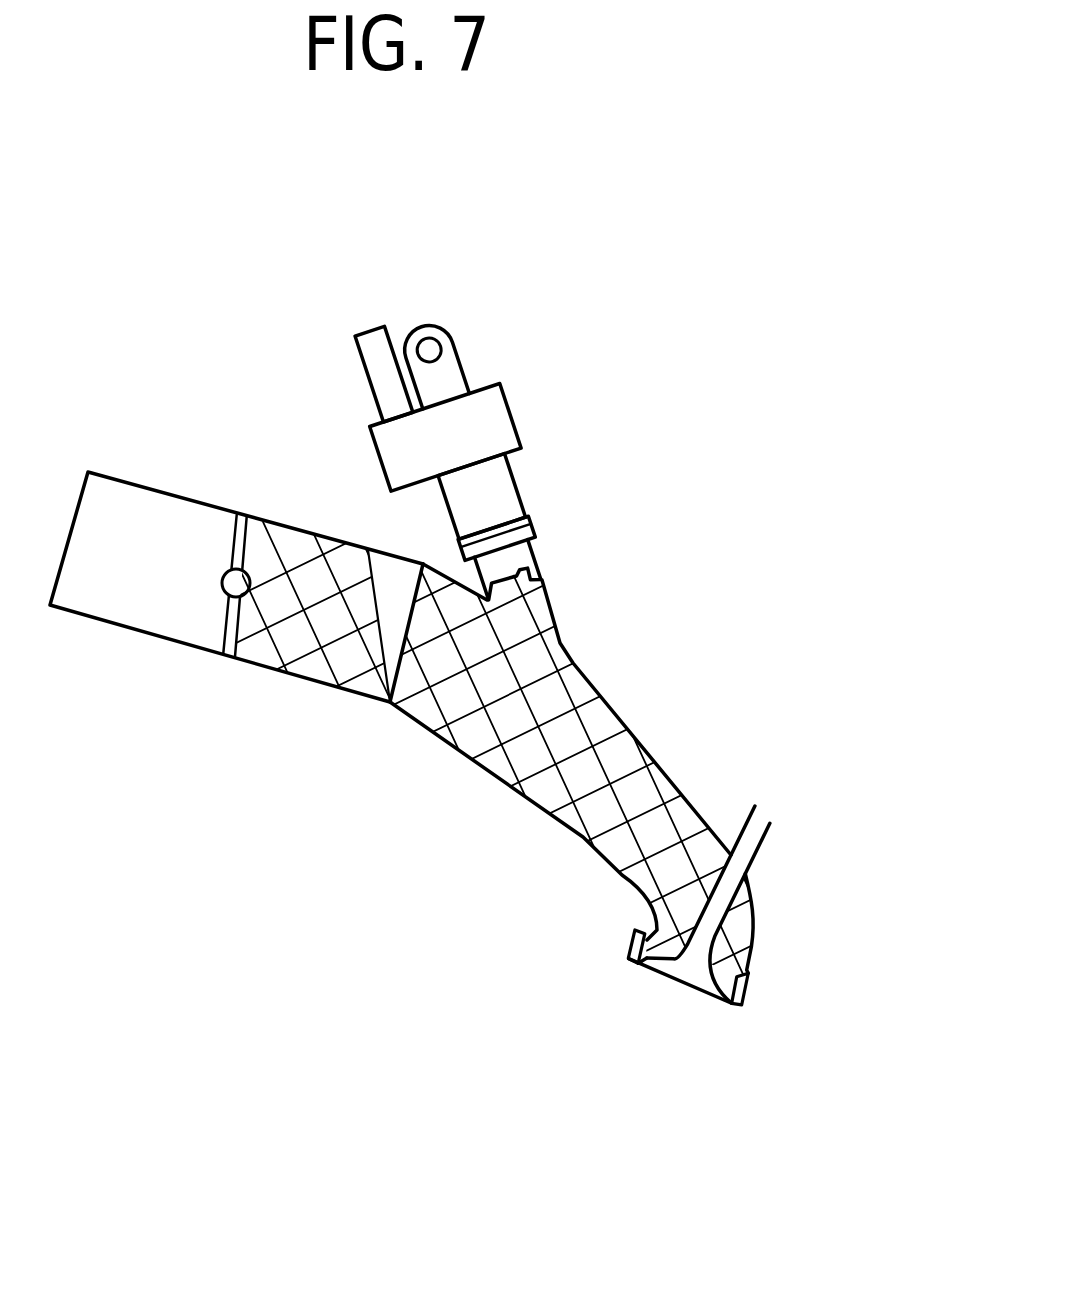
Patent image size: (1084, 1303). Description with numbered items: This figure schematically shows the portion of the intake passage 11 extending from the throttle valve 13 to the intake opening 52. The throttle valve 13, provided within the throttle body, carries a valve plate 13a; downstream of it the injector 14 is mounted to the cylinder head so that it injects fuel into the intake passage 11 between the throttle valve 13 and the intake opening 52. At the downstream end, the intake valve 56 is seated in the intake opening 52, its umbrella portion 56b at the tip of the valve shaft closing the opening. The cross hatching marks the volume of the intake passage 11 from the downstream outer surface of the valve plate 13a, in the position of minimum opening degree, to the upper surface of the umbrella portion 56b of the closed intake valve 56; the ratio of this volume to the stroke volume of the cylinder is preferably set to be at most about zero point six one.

The intake passage 11 is at (634, 728).
The throttle valve 13 is at (224, 592).
The valve plate 13a is at (233, 532).
The injector 14 is at (523, 487).
The intake opening 52 is at (690, 988).
The intake valve 56 is at (753, 993).
The umbrella portion 56b is at (684, 966).